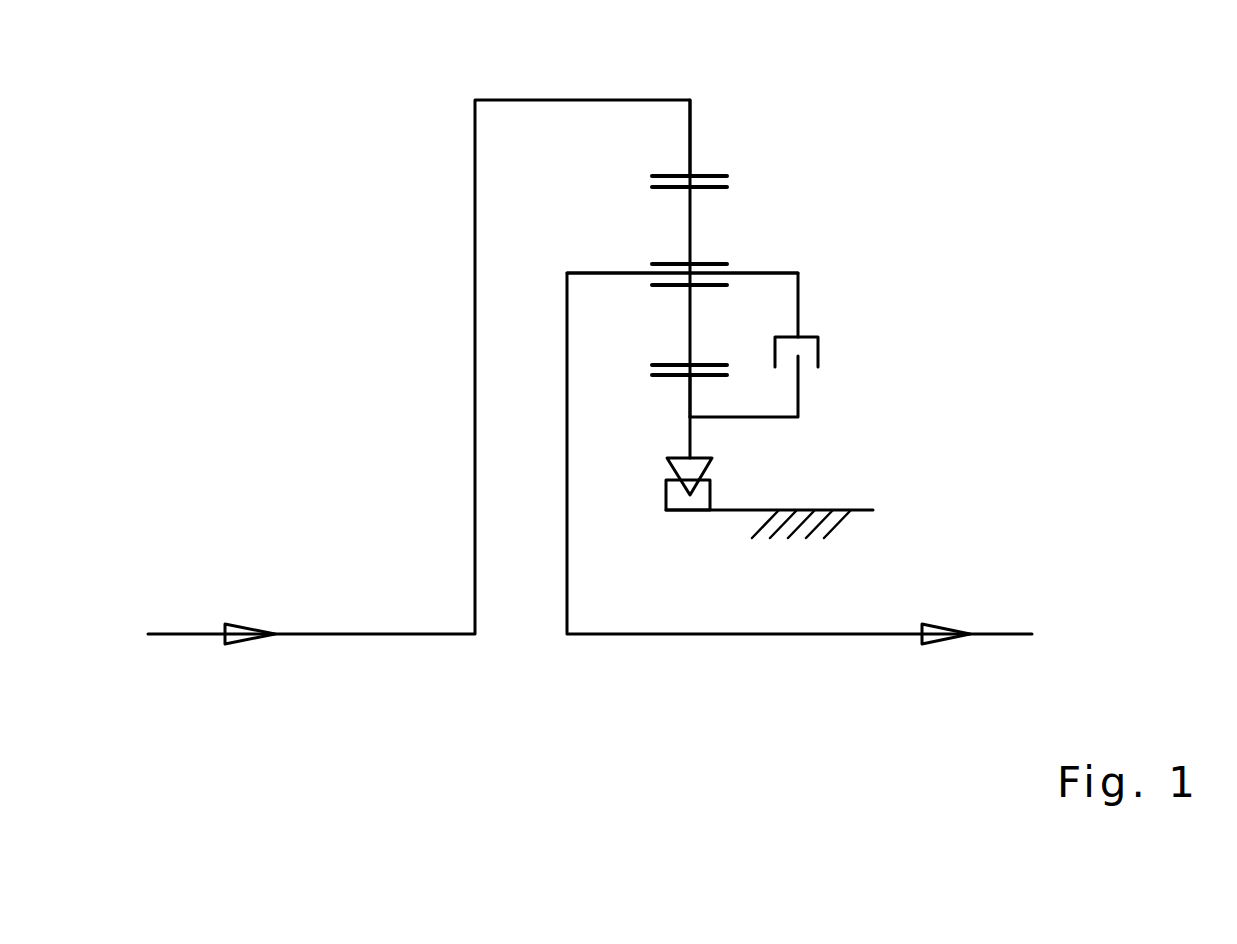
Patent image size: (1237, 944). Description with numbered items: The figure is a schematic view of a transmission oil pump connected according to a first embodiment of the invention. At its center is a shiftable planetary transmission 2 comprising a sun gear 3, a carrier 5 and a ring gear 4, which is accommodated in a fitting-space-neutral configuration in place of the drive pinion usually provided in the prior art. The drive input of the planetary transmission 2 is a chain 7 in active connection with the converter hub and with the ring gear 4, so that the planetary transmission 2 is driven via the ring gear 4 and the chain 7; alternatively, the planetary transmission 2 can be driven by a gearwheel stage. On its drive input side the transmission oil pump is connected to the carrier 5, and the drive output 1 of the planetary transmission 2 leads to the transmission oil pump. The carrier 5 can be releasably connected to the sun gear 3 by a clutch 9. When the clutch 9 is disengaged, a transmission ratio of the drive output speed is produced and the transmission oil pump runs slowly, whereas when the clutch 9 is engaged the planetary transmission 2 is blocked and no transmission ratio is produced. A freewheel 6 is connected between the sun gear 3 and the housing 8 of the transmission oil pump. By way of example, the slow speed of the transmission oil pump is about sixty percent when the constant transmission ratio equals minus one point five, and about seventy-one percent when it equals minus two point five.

The drive output 1 is at (892, 634).
The planetary transmission 2 is at (730, 248).
The sun gear 3 is at (690, 400).
The ring gear 4 is at (690, 160).
The carrier 5 is at (630, 273).
The freewheel 6 is at (670, 472).
The chain 7 is at (360, 634).
The housing 8 is at (817, 510).
The clutch 9 is at (805, 350).